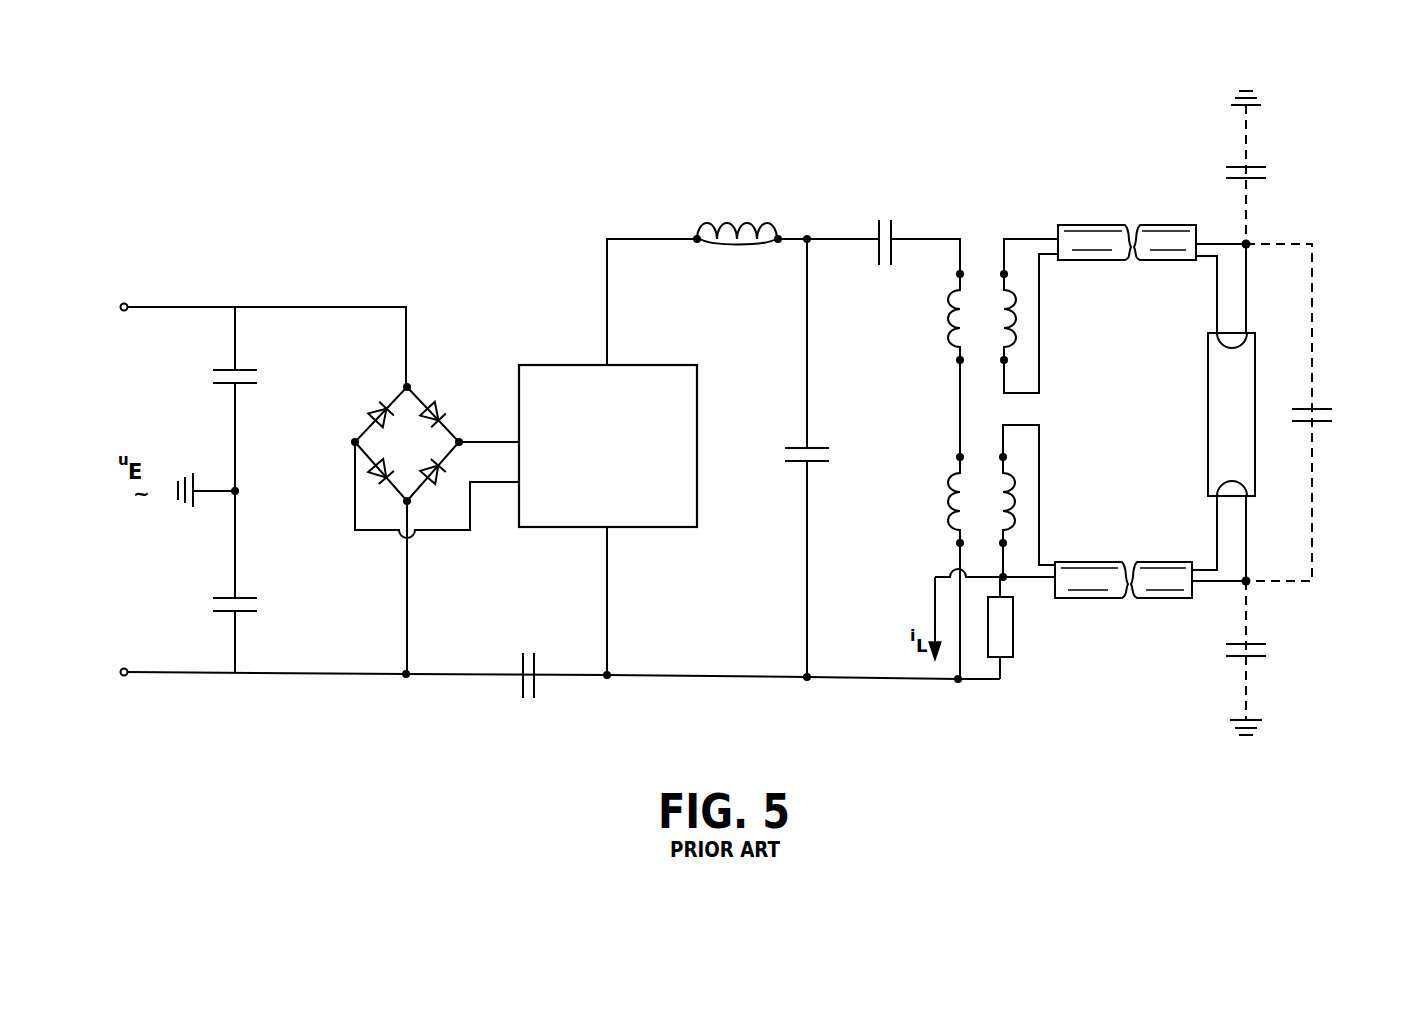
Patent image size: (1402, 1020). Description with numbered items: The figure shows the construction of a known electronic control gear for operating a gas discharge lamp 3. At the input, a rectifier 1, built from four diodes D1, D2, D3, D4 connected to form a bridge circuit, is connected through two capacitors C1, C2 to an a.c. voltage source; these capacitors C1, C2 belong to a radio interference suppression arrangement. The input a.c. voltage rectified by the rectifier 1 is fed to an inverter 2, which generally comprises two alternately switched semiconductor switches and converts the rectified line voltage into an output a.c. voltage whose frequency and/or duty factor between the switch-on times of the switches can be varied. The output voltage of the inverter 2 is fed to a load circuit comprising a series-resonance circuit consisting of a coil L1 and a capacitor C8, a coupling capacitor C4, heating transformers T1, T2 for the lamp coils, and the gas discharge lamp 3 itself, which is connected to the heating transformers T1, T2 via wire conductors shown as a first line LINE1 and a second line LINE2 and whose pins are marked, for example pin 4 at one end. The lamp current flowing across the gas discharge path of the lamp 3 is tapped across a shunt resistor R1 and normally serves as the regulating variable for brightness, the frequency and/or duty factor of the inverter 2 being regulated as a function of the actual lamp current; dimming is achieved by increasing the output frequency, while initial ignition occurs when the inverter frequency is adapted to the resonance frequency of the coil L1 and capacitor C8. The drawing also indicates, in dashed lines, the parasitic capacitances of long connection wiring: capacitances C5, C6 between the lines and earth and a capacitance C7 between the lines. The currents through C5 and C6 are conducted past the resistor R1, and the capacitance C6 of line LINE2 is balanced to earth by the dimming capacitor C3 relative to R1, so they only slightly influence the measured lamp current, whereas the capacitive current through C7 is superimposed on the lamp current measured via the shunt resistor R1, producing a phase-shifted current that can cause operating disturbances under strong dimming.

The capacitor C1 is at (248, 369).
The capacitor C2 is at (245, 612).
The dimming capacitor C3 is at (535, 688).
The coupling capacitor C4 is at (919, 225).
The parasitic capacitance C5 is at (1262, 166).
The parasitic capacitance C6 is at (1256, 657).
The parasitic capacitance C7 is at (1325, 422).
The capacitor C8 is at (812, 447).
The diode D1 is at (378, 410).
The diode D2 is at (376, 474).
The diode D3 is at (428, 399).
The diode D4 is at (438, 482).
The coil L1 is at (737, 236).
The heating transformer T1 is at (950, 320).
The heating transformer T2 is at (955, 510).
The shunt resistor R1 is at (1013, 636).
The rectifier 1 is at (416, 494).
The inverter 2 is at (663, 527).
The gas discharge lamp 3 is at (1214, 412).
The lamp pin 4 is at (1208, 294).
The line LINE1 is at (1068, 588).
The line LINE2 is at (1092, 236).